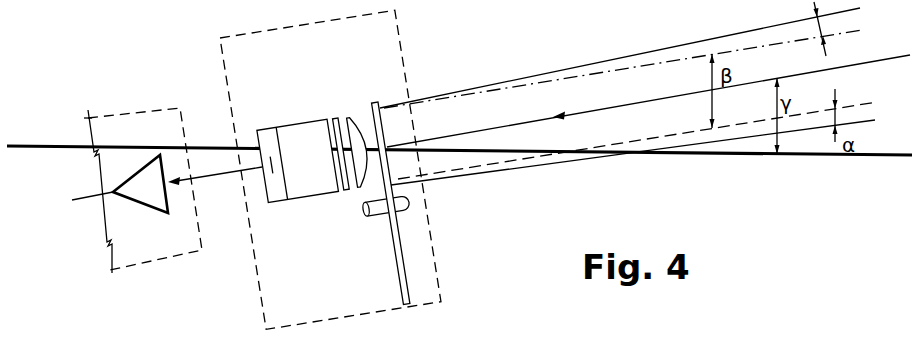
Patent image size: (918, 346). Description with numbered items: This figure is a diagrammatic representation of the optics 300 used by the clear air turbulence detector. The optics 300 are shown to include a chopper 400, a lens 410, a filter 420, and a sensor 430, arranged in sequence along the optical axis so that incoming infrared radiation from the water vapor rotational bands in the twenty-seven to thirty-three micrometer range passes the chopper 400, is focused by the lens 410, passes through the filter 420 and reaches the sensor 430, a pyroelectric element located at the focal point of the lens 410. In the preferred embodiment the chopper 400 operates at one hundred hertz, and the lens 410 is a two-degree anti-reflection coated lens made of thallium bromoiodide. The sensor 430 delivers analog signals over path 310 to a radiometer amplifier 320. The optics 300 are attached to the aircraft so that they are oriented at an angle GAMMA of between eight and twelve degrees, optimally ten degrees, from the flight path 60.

The flight path 60 is at (666, 156).
The optics 300 is at (434, 225).
The path 310 is at (205, 182).
The radiometer amplifier 320 is at (153, 110).
The chopper 400 is at (398, 253).
The lens 410 is at (348, 115).
The filter 420 is at (335, 116).
The sensor 430 is at (267, 132).